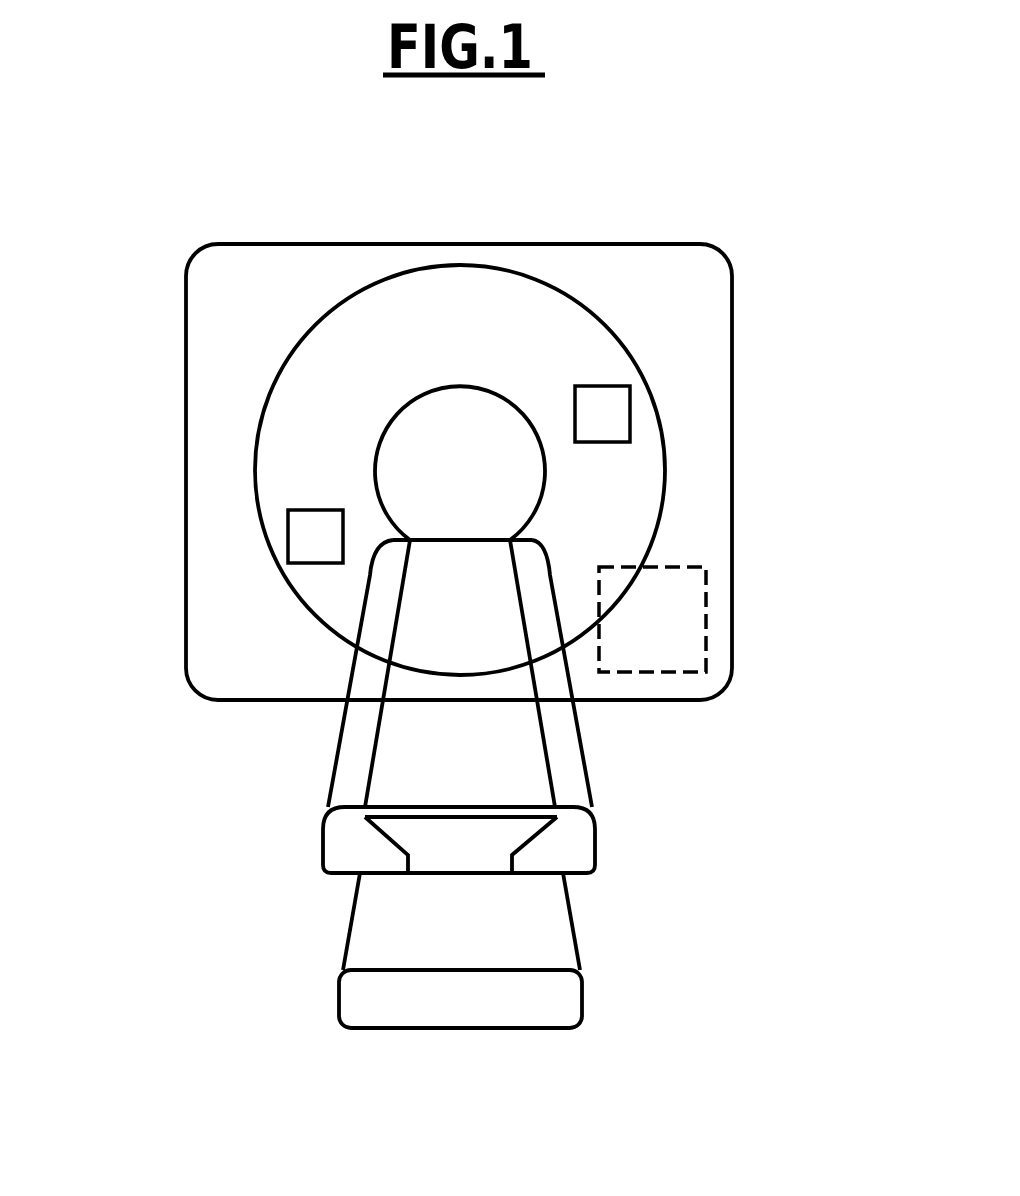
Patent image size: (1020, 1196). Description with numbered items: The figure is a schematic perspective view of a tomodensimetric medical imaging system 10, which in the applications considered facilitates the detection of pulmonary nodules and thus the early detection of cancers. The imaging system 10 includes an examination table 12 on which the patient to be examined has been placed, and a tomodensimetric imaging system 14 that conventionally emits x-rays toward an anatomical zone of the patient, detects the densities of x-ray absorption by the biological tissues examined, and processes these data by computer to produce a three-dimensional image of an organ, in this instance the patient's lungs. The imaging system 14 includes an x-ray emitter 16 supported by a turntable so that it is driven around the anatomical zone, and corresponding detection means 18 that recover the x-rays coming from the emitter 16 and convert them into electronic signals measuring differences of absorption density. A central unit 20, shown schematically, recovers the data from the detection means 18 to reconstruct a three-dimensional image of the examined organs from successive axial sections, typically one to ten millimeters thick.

The medical imaging system 10 is at (802, 497).
The examination table 12 is at (287, 822).
The tomodensimetric imaging system 14 is at (176, 405).
The x-ray emitter 16 is at (603, 423).
The detection means 18 is at (314, 532).
The central unit 20 is at (656, 623).